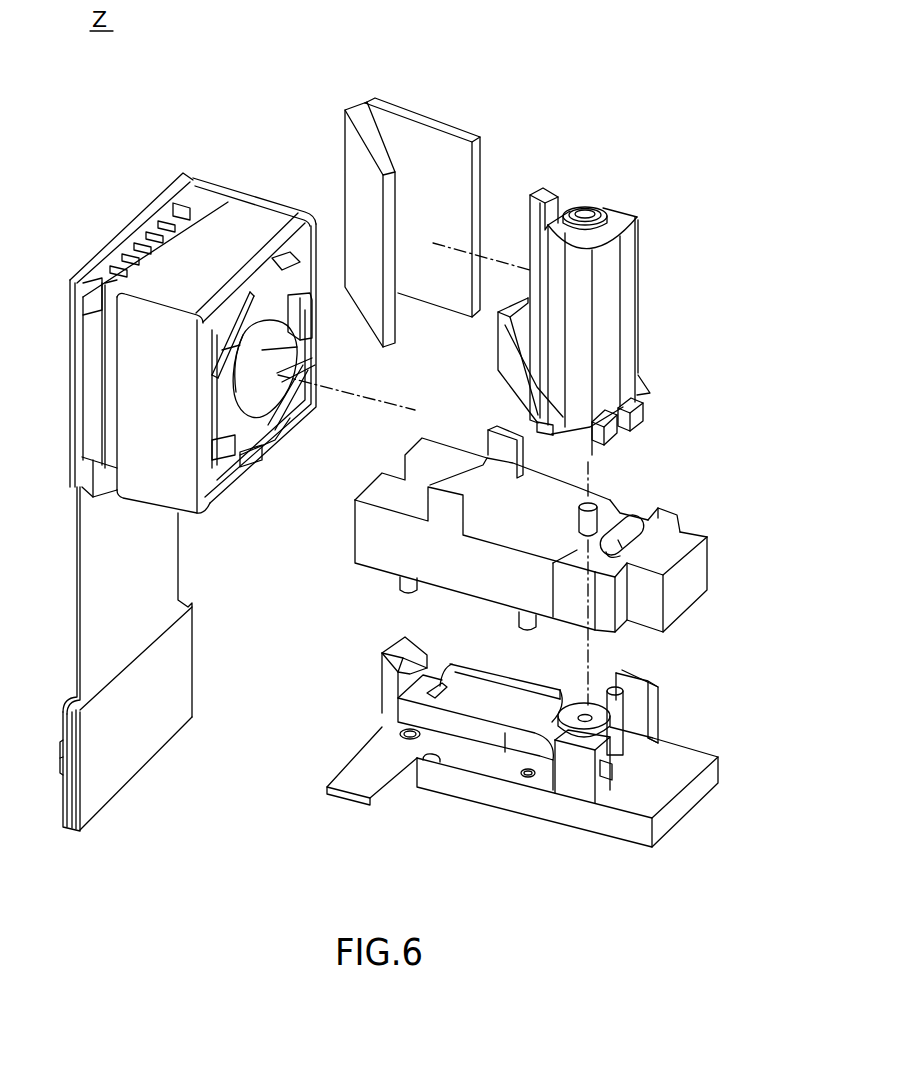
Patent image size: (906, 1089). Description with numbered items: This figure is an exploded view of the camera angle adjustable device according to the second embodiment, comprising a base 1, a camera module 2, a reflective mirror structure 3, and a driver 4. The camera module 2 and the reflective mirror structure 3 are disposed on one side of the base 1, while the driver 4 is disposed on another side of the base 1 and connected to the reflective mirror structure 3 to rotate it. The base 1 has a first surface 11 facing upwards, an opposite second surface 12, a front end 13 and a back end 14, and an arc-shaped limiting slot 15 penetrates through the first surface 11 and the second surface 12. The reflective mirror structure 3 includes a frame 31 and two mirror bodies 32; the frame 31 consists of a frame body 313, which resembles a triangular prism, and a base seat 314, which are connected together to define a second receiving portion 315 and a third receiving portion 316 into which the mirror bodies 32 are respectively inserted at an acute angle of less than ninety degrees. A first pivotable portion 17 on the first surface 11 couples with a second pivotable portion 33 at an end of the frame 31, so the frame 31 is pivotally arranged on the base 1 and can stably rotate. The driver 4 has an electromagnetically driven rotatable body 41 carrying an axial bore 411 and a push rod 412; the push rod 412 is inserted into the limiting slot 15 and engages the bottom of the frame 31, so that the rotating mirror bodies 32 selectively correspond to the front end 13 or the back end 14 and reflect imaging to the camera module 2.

The base 1 is at (700, 522).
The camera module 2 is at (253, 193).
The reflective mirror structure 3 is at (606, 96).
The driver 4 is at (362, 718).
The first surface 11 is at (665, 548).
The second surface 12 is at (493, 602).
The front end 13 is at (678, 508).
The back end 14 is at (368, 537).
The limiting slot 15 is at (632, 528).
The first pivotable portion 17 is at (577, 518).
The frame 31 is at (622, 224).
The mirror body 32 is at (460, 132).
The second pivotable portion 33 is at (583, 216).
The frame body 313 is at (578, 292).
The base seat 314 is at (507, 354).
The second receiving portion 315 is at (540, 383).
The third receiving portion 316 is at (645, 390).
The rotatable body 41 is at (580, 708).
The axial bore 411 is at (588, 710).
The push rod 412 is at (617, 715).